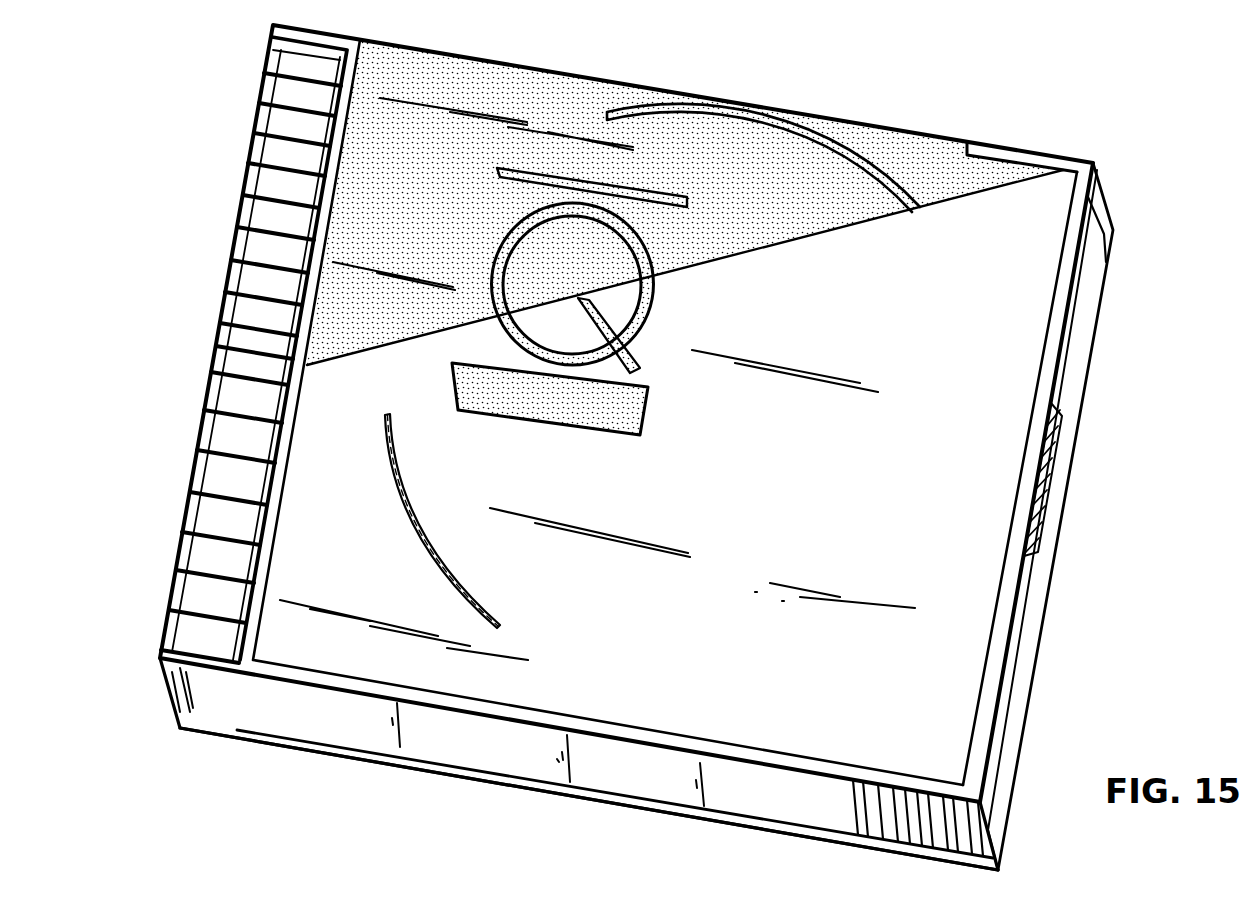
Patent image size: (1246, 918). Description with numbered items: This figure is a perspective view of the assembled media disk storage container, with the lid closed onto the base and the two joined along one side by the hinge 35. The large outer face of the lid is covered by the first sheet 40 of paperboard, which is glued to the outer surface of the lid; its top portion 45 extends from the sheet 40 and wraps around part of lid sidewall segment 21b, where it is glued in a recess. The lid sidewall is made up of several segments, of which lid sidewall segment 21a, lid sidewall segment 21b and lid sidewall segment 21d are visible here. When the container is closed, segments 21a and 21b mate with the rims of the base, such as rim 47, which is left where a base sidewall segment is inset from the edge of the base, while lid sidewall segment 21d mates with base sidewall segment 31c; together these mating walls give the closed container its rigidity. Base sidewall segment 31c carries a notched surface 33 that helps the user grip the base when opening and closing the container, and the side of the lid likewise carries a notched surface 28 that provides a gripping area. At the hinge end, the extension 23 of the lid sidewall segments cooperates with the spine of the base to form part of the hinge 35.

The lid sidewall segment 21a is at (1013, 155).
The lid sidewall segment 21b is at (533, 765).
The lid sidewall segment 21d is at (1047, 388).
The extension 23 is at (203, 720).
The notched surface 28 is at (920, 840).
The sidewall segment 31c is at (1028, 663).
The notched surface 33 is at (1058, 492).
The hinge 35 is at (235, 222).
The first sheet 40 is at (800, 473).
The top portion 45 is at (857, 133).
The rim 47 is at (300, 748).